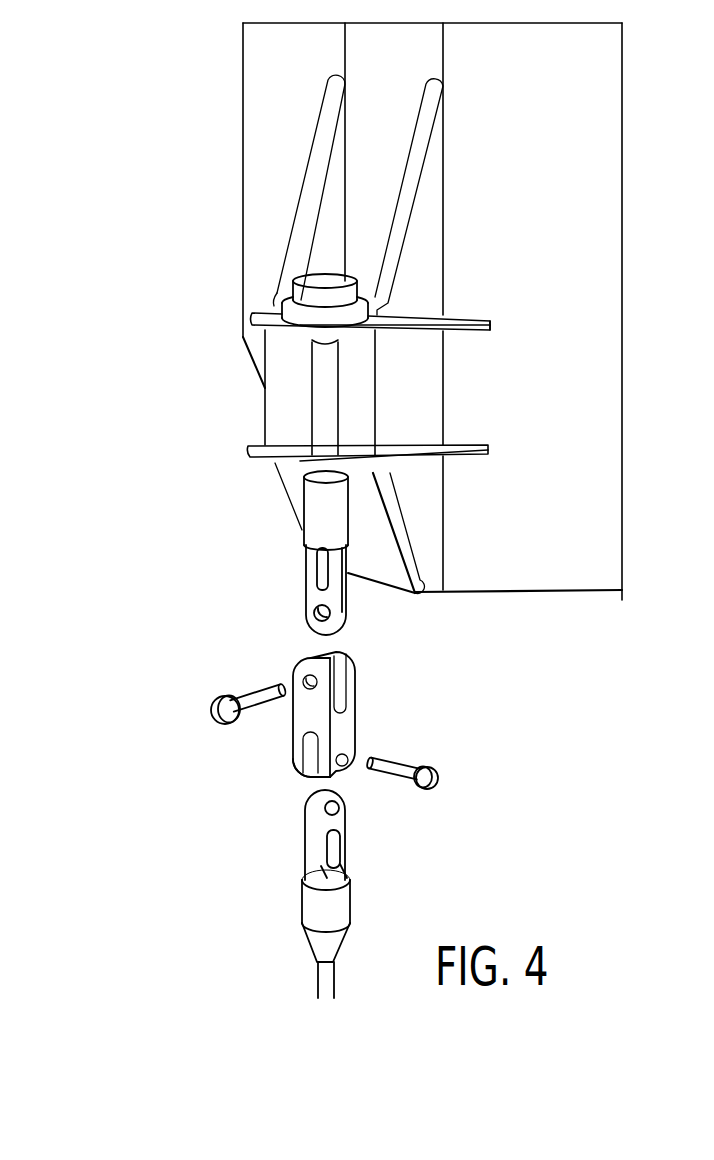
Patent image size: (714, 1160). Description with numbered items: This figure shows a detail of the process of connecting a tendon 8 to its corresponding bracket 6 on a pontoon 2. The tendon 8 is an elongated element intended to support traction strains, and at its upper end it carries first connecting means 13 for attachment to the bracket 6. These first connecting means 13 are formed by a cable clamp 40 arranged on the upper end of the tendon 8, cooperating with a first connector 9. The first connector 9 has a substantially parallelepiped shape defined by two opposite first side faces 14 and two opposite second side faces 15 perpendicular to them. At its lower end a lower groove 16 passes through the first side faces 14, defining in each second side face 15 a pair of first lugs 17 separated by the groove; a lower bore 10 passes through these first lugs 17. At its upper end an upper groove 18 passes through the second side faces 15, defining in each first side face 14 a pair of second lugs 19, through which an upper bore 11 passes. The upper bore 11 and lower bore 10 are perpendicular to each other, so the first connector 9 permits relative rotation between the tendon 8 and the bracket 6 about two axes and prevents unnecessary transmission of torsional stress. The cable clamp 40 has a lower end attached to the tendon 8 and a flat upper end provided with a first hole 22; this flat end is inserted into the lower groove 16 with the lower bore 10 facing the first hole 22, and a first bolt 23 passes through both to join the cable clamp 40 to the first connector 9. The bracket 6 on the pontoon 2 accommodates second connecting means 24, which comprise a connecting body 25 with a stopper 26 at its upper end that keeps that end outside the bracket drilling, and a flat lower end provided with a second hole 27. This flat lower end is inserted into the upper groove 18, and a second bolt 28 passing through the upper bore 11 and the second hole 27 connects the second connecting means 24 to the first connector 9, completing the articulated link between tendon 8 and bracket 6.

The pontoon 2 is at (552, 405).
The bracket 6 is at (293, 370).
The tendon 8 is at (327, 977).
The first connector 9 is at (352, 739).
The lower bore 10 is at (345, 765).
The upper bore 11 is at (305, 682).
The first connecting means 13 is at (321, 894).
The first side faces 14 is at (342, 733).
The second side faces 15 is at (303, 718).
The lower groove 16 is at (303, 742).
The first lugs 17 is at (303, 768).
The upper groove 18 is at (357, 686).
The second lugs 19 is at (343, 663).
The first hole 22 is at (338, 815).
The first bolt 23 is at (440, 775).
The second connecting means 24 is at (367, 562).
The connecting body 25 is at (322, 512).
The stopper 26 is at (323, 298).
The second hole 27 is at (307, 612).
The second bolt 28 is at (240, 700).
The cable clamp 40 is at (332, 902).